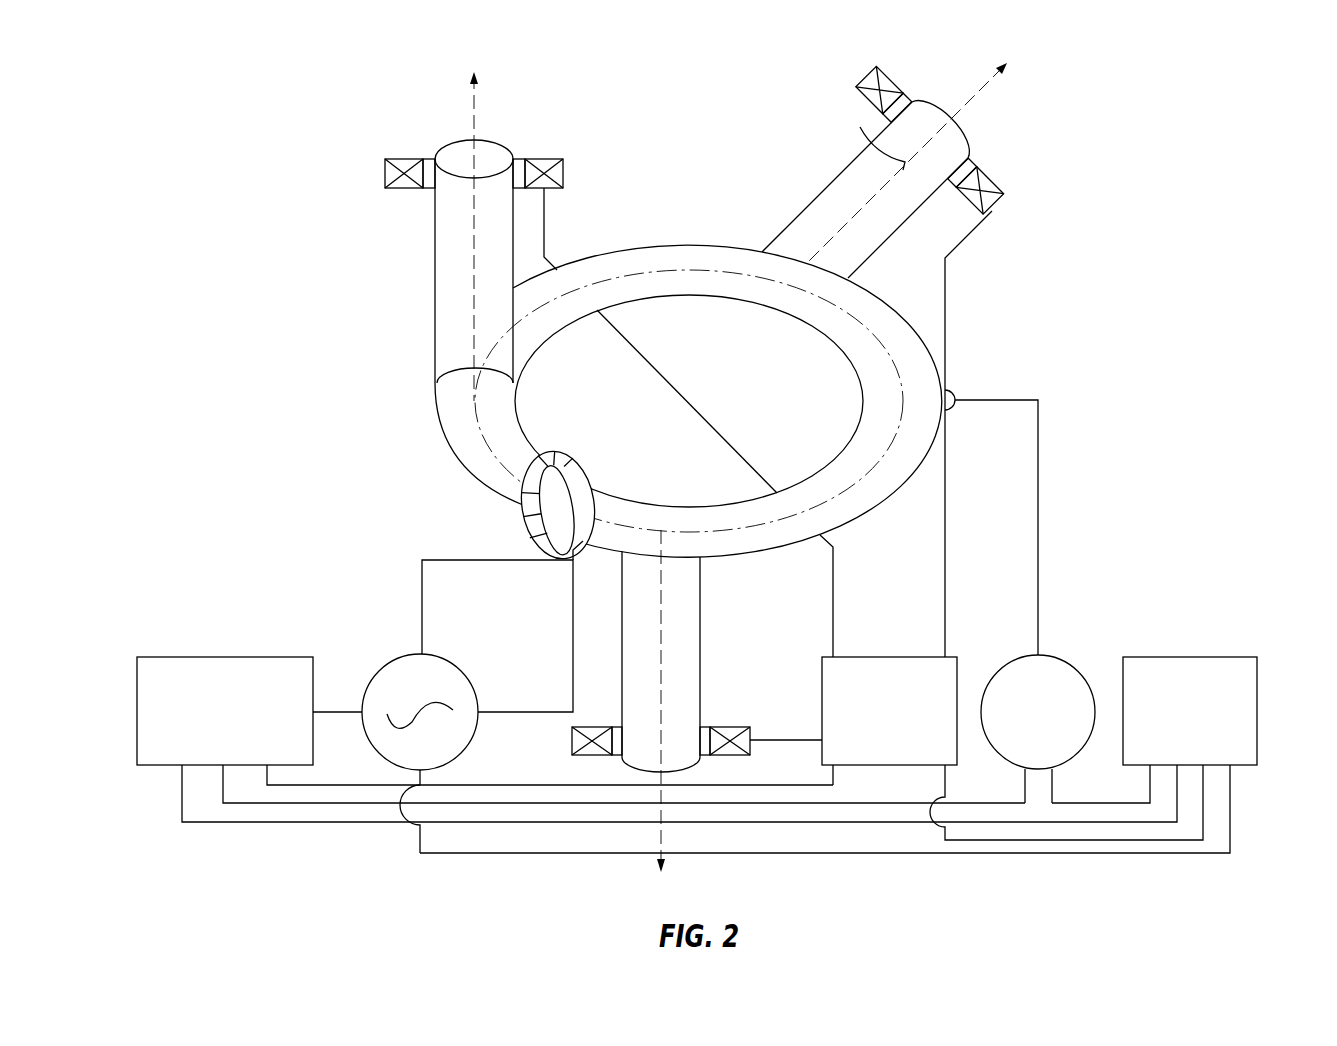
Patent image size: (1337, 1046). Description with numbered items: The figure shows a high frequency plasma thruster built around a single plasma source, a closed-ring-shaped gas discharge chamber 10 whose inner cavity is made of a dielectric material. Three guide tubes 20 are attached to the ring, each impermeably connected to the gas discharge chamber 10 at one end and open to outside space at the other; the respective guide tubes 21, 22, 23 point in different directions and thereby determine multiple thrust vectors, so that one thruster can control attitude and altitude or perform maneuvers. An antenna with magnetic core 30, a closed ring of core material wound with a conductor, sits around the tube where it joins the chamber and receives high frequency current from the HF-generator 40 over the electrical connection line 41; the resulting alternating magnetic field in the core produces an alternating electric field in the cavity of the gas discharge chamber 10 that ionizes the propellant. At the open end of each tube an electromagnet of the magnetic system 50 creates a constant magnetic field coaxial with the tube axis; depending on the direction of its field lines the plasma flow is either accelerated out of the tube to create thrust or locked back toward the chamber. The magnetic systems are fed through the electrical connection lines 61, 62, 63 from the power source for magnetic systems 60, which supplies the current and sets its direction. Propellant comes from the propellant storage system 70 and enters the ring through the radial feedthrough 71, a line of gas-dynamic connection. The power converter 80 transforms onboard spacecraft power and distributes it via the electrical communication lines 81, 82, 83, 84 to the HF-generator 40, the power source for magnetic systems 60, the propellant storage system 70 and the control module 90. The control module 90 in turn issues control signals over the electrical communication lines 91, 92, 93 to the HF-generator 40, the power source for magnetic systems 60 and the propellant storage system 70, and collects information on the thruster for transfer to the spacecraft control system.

The gas discharge chamber 10 is at (867, 497).
The guide tube 20 is at (437, 232).
The guide tube 21 is at (475, 312).
The guide tube 22 is at (662, 645).
The guide tube 23 is at (880, 130).
The antenna with magnetic core 30 is at (570, 456).
The HF-generator 40 is at (385, 660).
The electrical connection line 41 is at (422, 573).
The magnetic system 50 is at (385, 176).
The power source for magnetic systems 60 is at (907, 672).
The electrical connection line 61 is at (778, 742).
The electrical connection line 62 is at (680, 392).
The electrical connection line 63 is at (946, 570).
The propellant storage system 70 is at (1050, 656).
The radial feedthrough 71 is at (1040, 480).
The power converter 80 is at (193, 670).
The electrical communication line 81 is at (343, 707).
The electrical communication line 82 is at (530, 783).
The electrical communication line 83 is at (273, 805).
The electrical communication line 84 is at (333, 822).
The control module 90 is at (1185, 668).
The electrical communication line 91 is at (1232, 834).
The electrical communication line 92 is at (1207, 810).
The electrical communication line 93 is at (1093, 803).